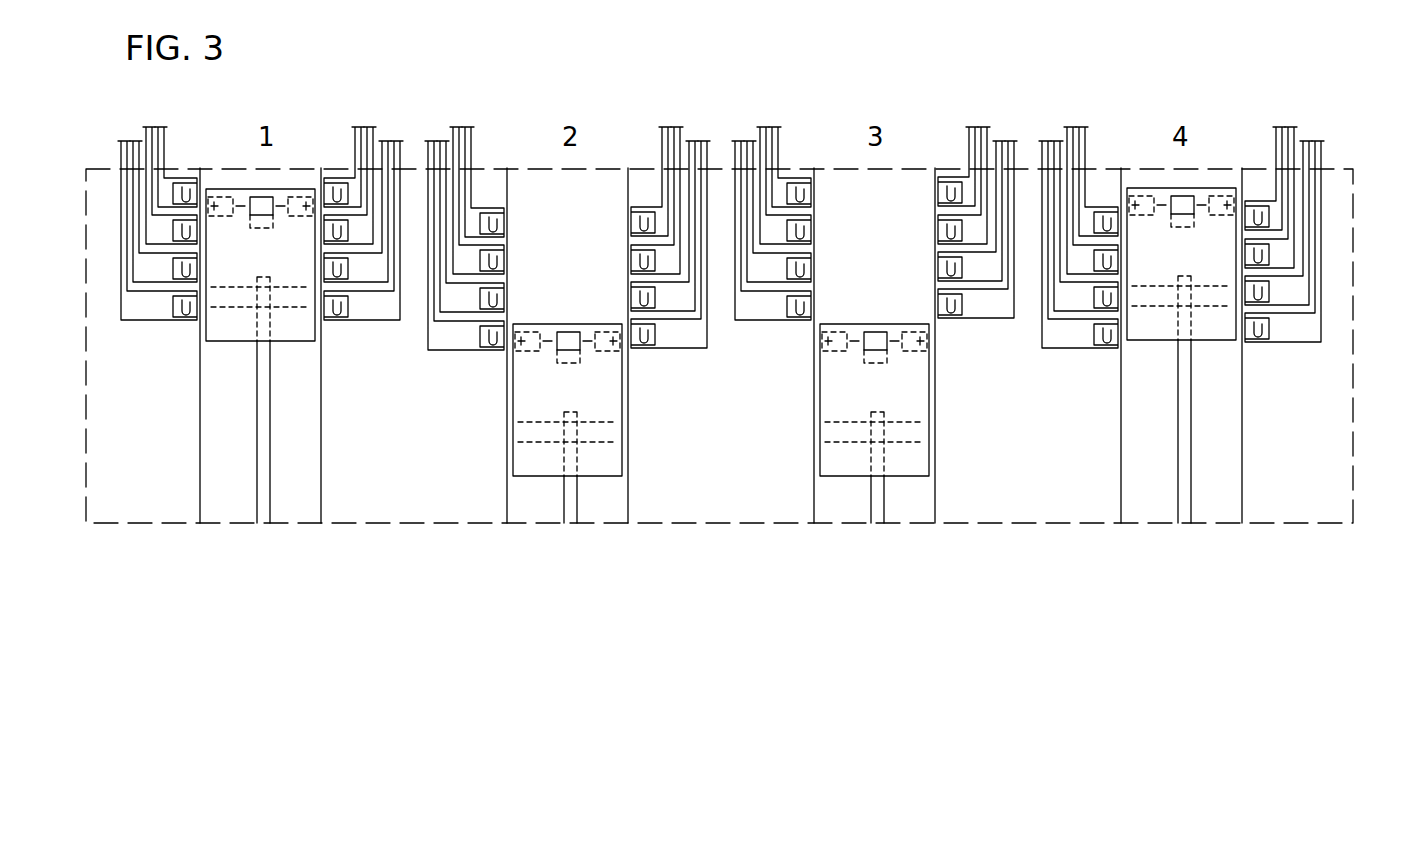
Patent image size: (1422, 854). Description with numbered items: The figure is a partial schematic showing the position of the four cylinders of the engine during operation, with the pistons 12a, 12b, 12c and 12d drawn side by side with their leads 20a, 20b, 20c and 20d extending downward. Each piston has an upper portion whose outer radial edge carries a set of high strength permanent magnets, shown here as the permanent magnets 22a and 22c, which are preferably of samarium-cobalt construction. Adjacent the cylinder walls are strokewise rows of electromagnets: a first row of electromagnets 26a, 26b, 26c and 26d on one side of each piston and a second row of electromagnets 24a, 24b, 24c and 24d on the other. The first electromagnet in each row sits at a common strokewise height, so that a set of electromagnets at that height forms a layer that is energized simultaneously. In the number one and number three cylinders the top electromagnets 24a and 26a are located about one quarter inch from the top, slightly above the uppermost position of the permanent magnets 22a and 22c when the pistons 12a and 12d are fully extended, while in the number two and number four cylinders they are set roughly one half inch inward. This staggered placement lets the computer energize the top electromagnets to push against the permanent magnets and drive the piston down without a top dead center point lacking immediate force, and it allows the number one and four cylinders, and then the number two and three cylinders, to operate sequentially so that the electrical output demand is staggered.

The piston 12a is at (238, 342).
The piston 12b is at (547, 476).
The piston 12c is at (854, 476).
The piston 12d is at (1161, 340).
The output lead 20a is at (270, 510).
The output lead 20b is at (577, 500).
The output lead 20c is at (884, 500).
The output lead 20d is at (1191, 508).
The permanent magnet 22a is at (1219, 195).
The permanent magnet 22c is at (1147, 195).
The electromagnet 24a is at (1368, 236).
The electromagnet 24b is at (1368, 274).
The electromagnet 24c is at (1368, 312).
The electromagnet 24d is at (1368, 349).
The electromagnet 26a is at (1098, 231).
The electromagnet 26b is at (1100, 266).
The electromagnet 26c is at (1103, 304).
The electromagnet 26d is at (1106, 342).